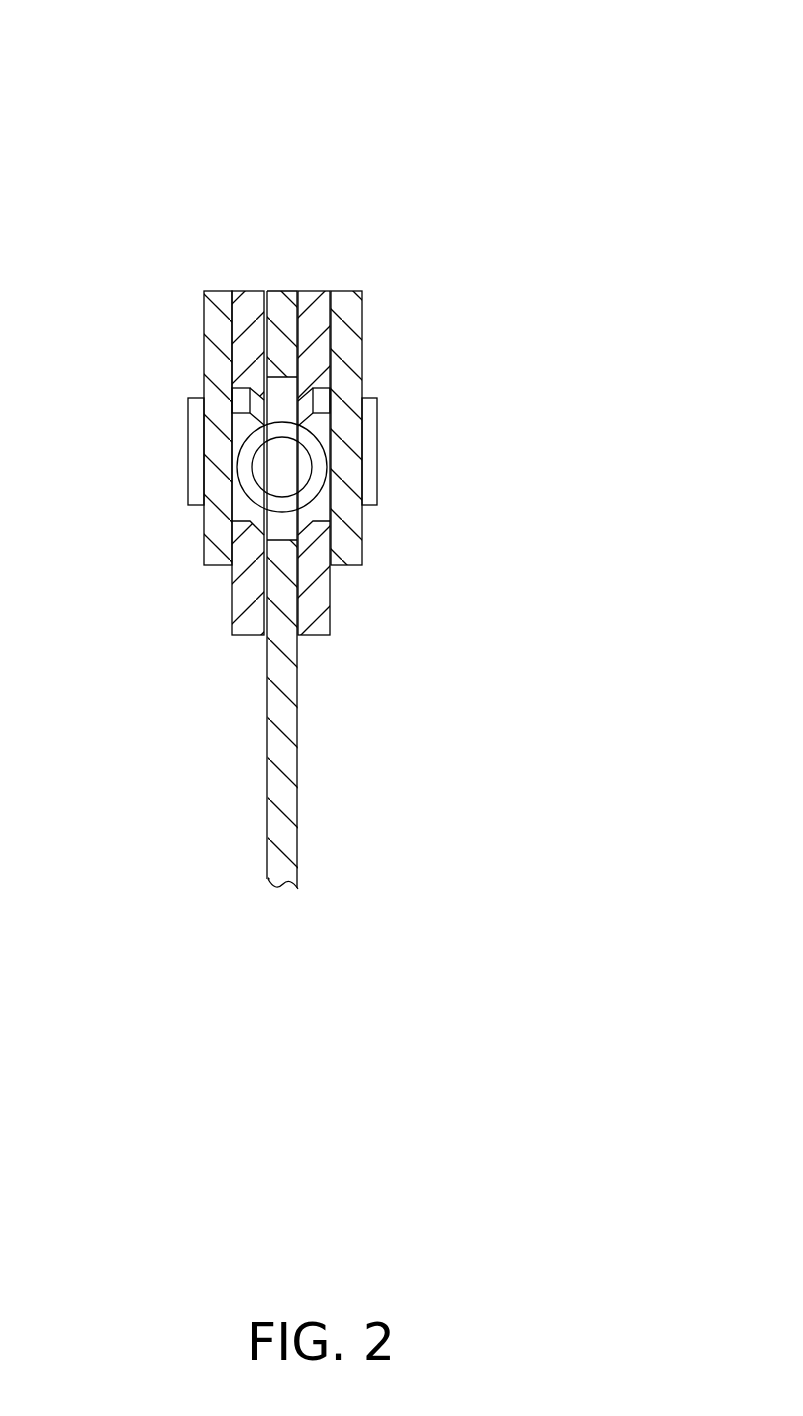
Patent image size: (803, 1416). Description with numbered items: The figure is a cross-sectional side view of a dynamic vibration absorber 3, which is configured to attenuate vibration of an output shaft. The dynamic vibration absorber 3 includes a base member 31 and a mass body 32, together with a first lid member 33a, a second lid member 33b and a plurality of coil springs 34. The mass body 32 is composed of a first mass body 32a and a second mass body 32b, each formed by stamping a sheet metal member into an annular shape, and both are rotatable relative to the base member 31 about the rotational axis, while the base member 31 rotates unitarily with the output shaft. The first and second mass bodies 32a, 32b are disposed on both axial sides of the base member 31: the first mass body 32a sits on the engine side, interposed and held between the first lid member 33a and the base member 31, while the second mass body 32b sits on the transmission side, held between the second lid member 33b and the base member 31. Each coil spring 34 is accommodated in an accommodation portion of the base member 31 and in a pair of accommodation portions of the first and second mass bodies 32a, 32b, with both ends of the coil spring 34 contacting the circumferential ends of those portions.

The dynamic vibration absorber 3 is at (425, 100).
The base member 31 is at (297, 797).
The mass body 32 is at (332, 147).
The first mass body 32a is at (248, 297).
The second mass body 32b is at (318, 297).
The first lid member 33a is at (218, 342).
The second lid member 33b is at (353, 353).
The coil spring 34 is at (320, 458).